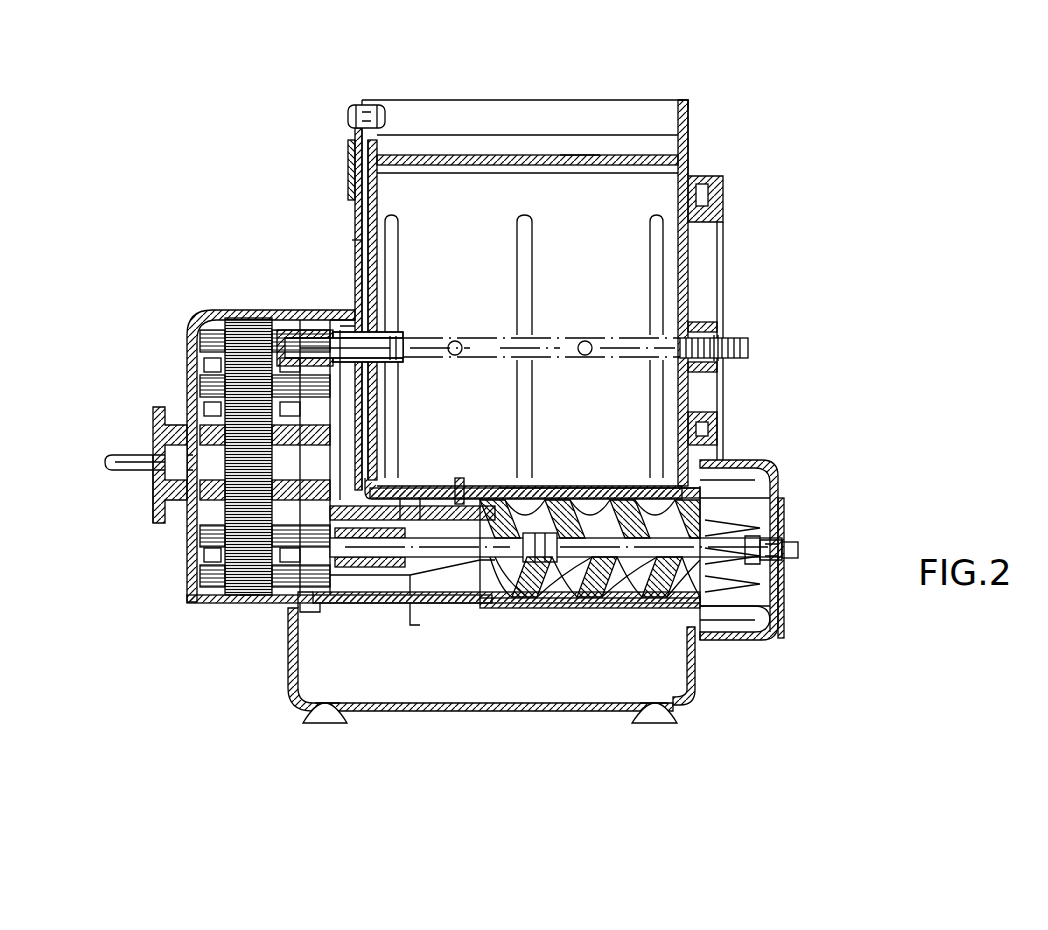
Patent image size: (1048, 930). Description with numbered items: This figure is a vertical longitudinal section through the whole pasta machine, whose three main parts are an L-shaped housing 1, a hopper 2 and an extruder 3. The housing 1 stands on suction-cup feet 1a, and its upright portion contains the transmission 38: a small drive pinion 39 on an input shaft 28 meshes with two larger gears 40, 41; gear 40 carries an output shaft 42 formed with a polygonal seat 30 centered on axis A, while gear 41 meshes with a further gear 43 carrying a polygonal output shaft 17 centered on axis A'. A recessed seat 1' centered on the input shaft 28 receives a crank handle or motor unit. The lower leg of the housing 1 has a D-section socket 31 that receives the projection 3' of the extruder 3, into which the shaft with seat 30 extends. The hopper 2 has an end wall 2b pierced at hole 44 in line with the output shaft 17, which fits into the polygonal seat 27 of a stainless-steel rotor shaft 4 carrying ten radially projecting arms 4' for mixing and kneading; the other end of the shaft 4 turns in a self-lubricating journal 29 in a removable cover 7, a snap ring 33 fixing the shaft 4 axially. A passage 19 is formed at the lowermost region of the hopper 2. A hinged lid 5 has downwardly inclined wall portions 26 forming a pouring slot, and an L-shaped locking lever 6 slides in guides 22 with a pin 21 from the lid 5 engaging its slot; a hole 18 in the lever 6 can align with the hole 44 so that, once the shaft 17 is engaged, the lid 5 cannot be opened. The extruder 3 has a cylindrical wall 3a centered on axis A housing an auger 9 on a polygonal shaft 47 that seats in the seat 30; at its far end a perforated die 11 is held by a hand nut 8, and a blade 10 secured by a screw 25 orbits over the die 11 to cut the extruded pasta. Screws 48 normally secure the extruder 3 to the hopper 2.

The housing 1 is at (315, 470).
The recessed seat 1' is at (139, 512).
The suction-cup feet 1a is at (336, 723).
The hopper 2 is at (690, 162).
The end wall 2b is at (378, 188).
The extruder 3 is at (494, 651).
The projection 3' is at (369, 626).
The cylindrical wall 3a is at (520, 604).
The rotor shaft 4 is at (541, 325).
The arms 4' is at (524, 346).
The lid 5 is at (696, 104).
The locking lever 6 is at (352, 249).
The removable cover 7 is at (726, 428).
The hand nut 8 is at (782, 468).
The auger 9 is at (668, 612).
The blade 10 is at (788, 515).
The perforated die 11 is at (775, 610).
The output shaft 17 is at (378, 352).
The throughgoing hole 18 is at (350, 325).
The passage 19 is at (545, 488).
The pin 21 is at (340, 104).
The guides 22 is at (342, 156).
The screw 25 is at (795, 565).
The inclined wall portions 26 is at (580, 134).
The polygonal seat 27 is at (407, 345).
The input shaft 28 is at (120, 463).
The journal 29 is at (725, 333).
The polygonal seat 30 is at (349, 568).
The socket 31 is at (418, 488).
The snap ring 33 is at (730, 371).
The transmission 38 is at (245, 607).
The drive pinion 39 is at (178, 498).
The gear 40 is at (243, 560).
The gear 41 is at (212, 378).
The output shaft 42 is at (302, 612).
The gear 43 is at (212, 340).
The hole 44 is at (376, 334).
The polygonal shaft 47 is at (598, 540).
The screws 48 is at (465, 478).
The axis A is at (822, 552).
The axis A' is at (520, 319).